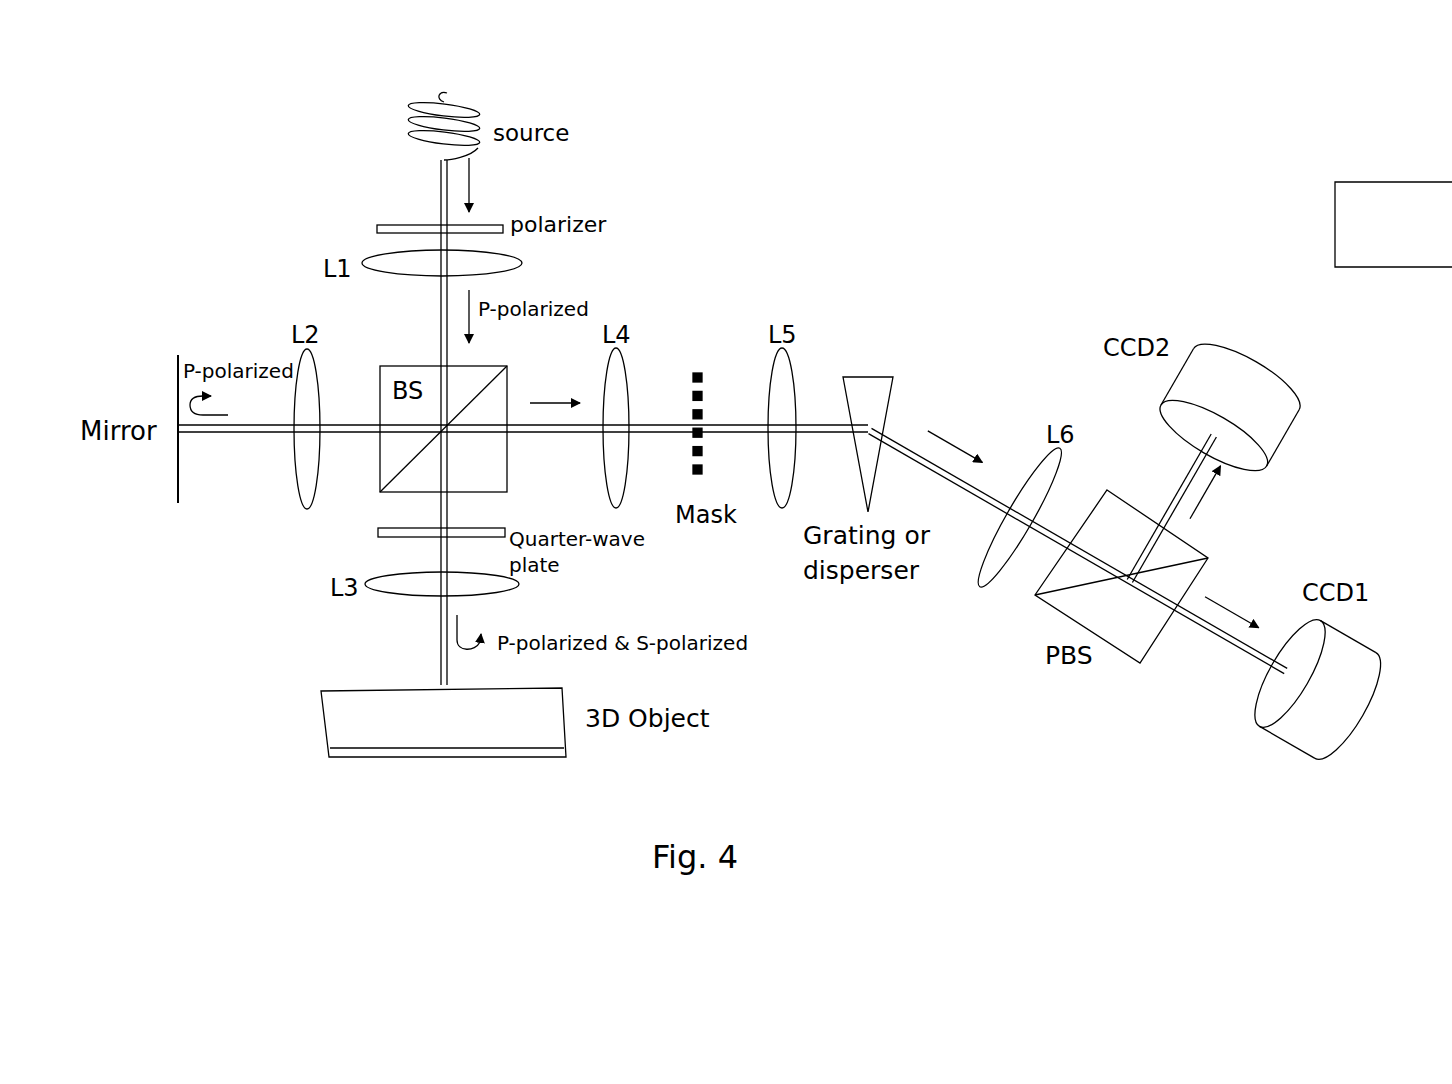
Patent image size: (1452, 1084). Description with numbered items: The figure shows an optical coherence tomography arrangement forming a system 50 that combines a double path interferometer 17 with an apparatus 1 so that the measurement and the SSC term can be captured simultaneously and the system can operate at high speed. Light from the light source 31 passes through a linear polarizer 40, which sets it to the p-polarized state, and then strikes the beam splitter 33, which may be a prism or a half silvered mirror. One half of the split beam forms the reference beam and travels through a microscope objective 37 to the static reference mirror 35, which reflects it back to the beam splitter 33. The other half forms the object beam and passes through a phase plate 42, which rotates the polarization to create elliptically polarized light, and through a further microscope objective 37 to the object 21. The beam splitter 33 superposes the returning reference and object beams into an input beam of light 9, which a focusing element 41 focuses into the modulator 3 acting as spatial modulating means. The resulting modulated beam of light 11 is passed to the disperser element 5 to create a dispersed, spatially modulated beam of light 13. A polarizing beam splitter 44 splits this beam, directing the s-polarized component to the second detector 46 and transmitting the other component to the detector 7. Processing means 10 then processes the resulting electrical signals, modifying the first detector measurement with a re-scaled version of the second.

The apparatus 1 is at (931, 322).
The modulator 3 is at (700, 372).
The disperser element 5 is at (872, 376).
The detector 7 is at (1343, 710).
The input beam of light 9 is at (552, 402).
The processing means 10 is at (1380, 183).
The modulated beam of light 11 is at (822, 435).
The dispersed beam of light 13 is at (960, 492).
The optical coherence tomography arrangement 17 is at (199, 611).
The object 21 is at (321, 716).
The light source 31 is at (497, 115).
The beam splitter 33 is at (404, 366).
The static reference mirror 35 is at (178, 368).
The microscope objective 37 is at (294, 488).
The linear polarizer 40 is at (380, 226).
The focusing element 41 is at (627, 350).
The phase plate 42 is at (378, 531).
The polarizing beam splitter 44 is at (1120, 655).
The second detector 46 is at (1290, 410).
The system 50 is at (941, 185).